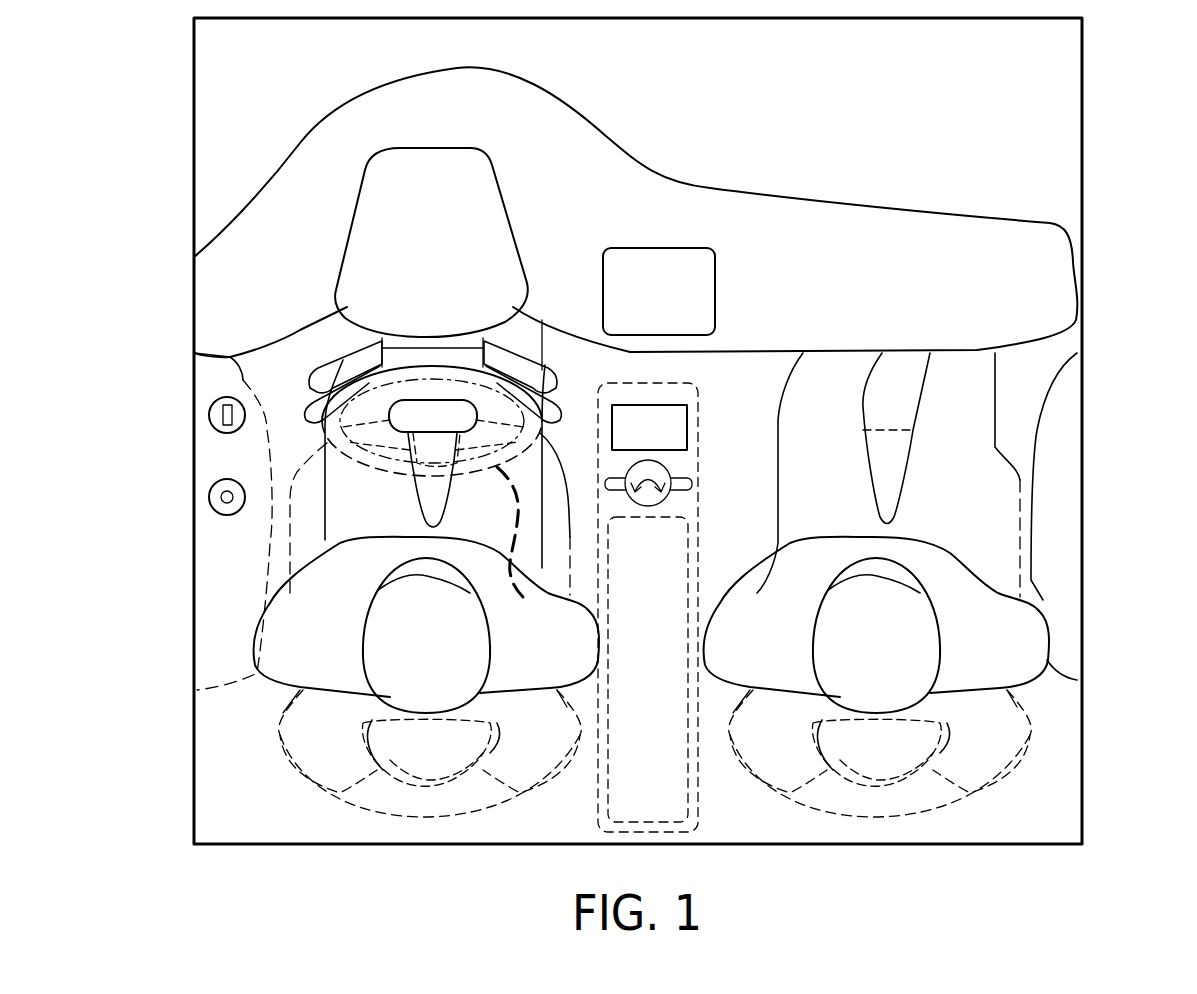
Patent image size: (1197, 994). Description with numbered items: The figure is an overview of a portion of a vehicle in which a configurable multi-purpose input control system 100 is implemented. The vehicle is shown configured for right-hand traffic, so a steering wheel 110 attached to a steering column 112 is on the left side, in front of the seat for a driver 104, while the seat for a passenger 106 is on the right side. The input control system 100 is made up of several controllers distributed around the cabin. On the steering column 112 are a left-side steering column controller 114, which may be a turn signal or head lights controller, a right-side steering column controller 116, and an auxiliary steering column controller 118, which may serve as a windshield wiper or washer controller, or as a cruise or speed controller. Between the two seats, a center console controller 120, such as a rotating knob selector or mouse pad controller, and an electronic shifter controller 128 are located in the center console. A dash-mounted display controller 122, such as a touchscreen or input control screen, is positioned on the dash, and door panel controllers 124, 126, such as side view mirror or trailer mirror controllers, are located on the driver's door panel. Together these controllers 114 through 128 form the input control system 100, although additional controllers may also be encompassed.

The configurable multi-purpose input control system 100 is at (560, 164).
The seat for a driver 104 is at (248, 638).
The seat for a passenger 106 is at (1050, 653).
The steering wheel 110 is at (524, 551).
The steering column 112 is at (405, 400).
The left-side steering column controller 114 is at (343, 357).
The right-side steering column controller 116 is at (525, 357).
The auxiliary steering column controller 118 is at (558, 415).
The center console controller 120 is at (708, 190).
The dash-mounted display controller 122 is at (715, 290).
The door panel controller 124 is at (208, 415).
The door panel controller 126 is at (208, 497).
The electronic shifter controller 128 is at (687, 435).